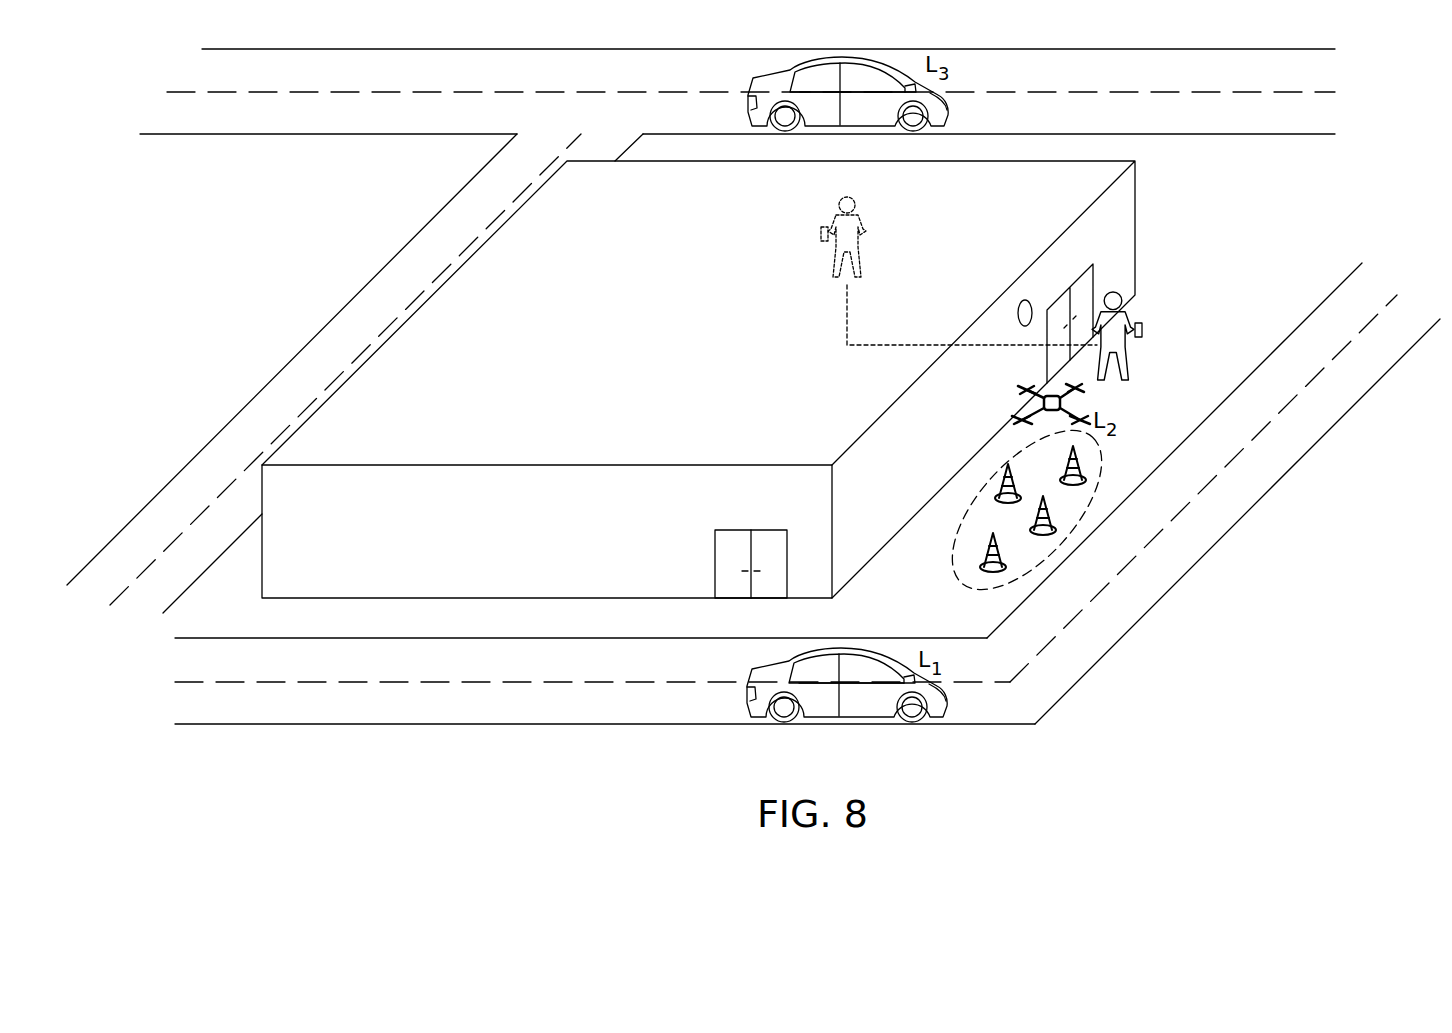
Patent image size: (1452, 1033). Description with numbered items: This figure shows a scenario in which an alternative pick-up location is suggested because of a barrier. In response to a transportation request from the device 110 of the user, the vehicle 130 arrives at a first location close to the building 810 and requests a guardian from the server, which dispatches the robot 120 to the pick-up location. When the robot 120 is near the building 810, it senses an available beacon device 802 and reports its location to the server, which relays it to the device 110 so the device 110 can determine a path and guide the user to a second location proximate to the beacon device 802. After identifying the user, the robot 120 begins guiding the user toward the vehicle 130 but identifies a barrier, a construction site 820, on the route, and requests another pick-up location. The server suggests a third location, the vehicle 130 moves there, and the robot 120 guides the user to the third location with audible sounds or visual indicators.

The device 110 is at (1142, 331).
The robot 120 is at (1020, 396).
The vehicle 130 is at (925, 722).
The beacon device 802 is at (1017, 312).
The building 810 is at (1135, 235).
The construction site 820 is at (963, 566).